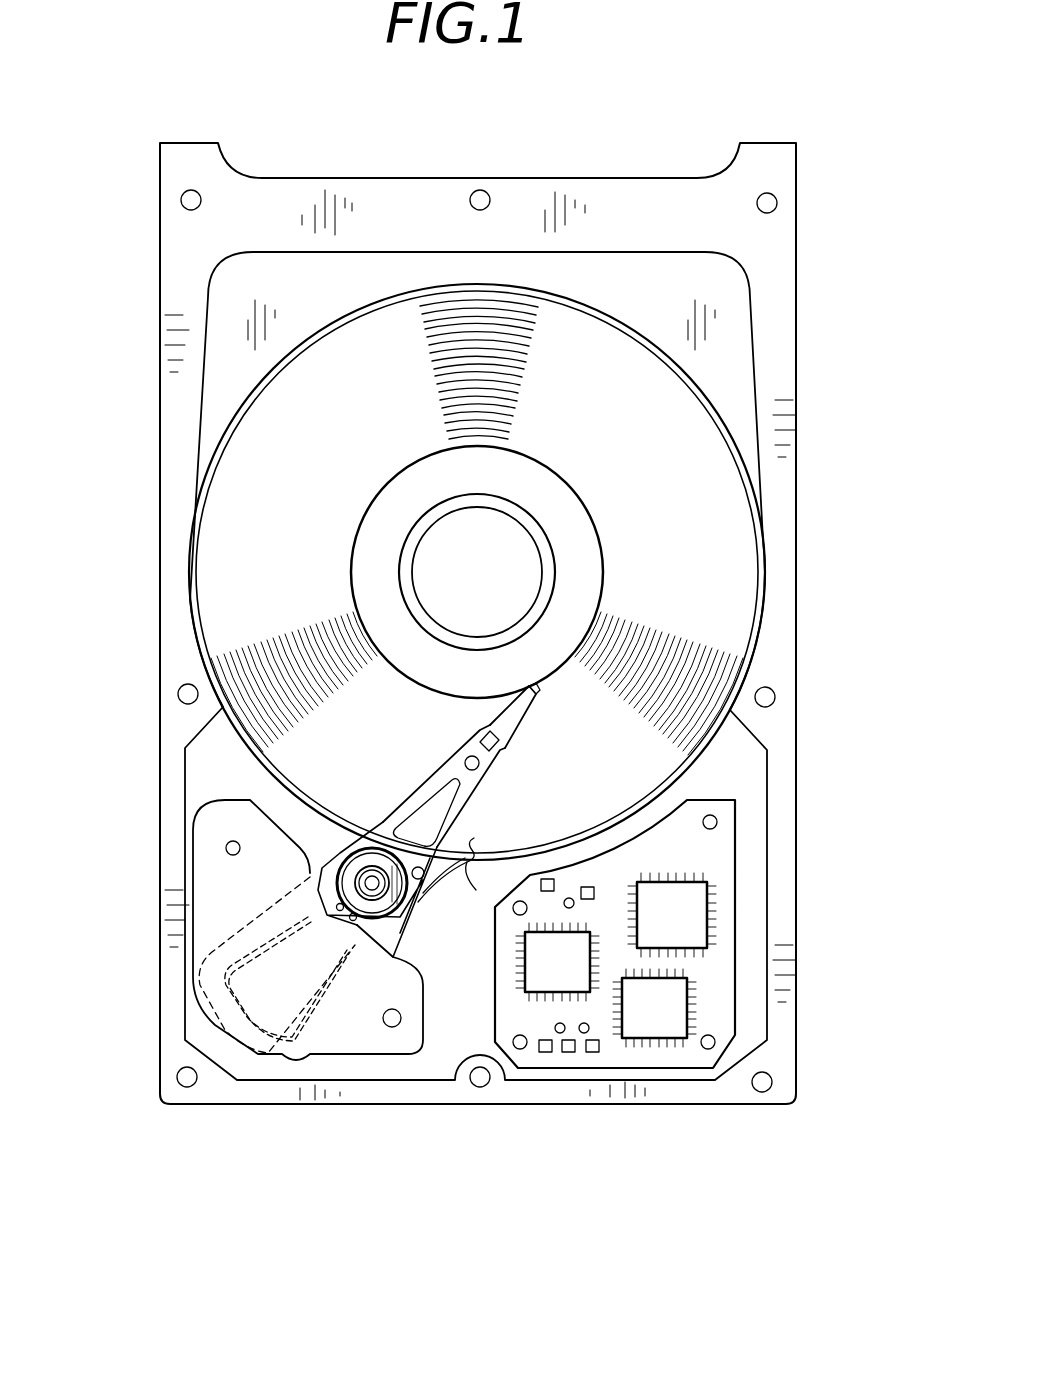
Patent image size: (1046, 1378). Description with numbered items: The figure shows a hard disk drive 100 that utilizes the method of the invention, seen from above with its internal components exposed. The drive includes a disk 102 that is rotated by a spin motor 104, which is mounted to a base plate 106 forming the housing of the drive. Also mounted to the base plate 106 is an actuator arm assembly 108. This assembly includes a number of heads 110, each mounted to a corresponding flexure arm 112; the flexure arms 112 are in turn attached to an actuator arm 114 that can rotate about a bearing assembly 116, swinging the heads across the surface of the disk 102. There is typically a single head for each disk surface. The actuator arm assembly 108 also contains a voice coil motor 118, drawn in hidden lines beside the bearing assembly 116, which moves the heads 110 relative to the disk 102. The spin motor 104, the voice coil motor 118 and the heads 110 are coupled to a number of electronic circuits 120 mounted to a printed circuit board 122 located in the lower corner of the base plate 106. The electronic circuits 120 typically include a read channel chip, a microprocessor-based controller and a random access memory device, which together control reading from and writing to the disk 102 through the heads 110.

The hard disk drive 100 is at (775, 101).
The disk 102 is at (664, 442).
The spin motor 104 is at (578, 532).
The base plate 106 is at (235, 294).
The actuator arm assembly 108 is at (468, 795).
The head 110 is at (536, 689).
The flexure arm 112 is at (490, 724).
The actuator arm 114 is at (427, 790).
The bearing assembly 116 is at (449, 900).
The voice coil motor 118 is at (312, 1003).
The electronic circuits 120 is at (690, 913).
The printed circuit board 122 is at (718, 843).